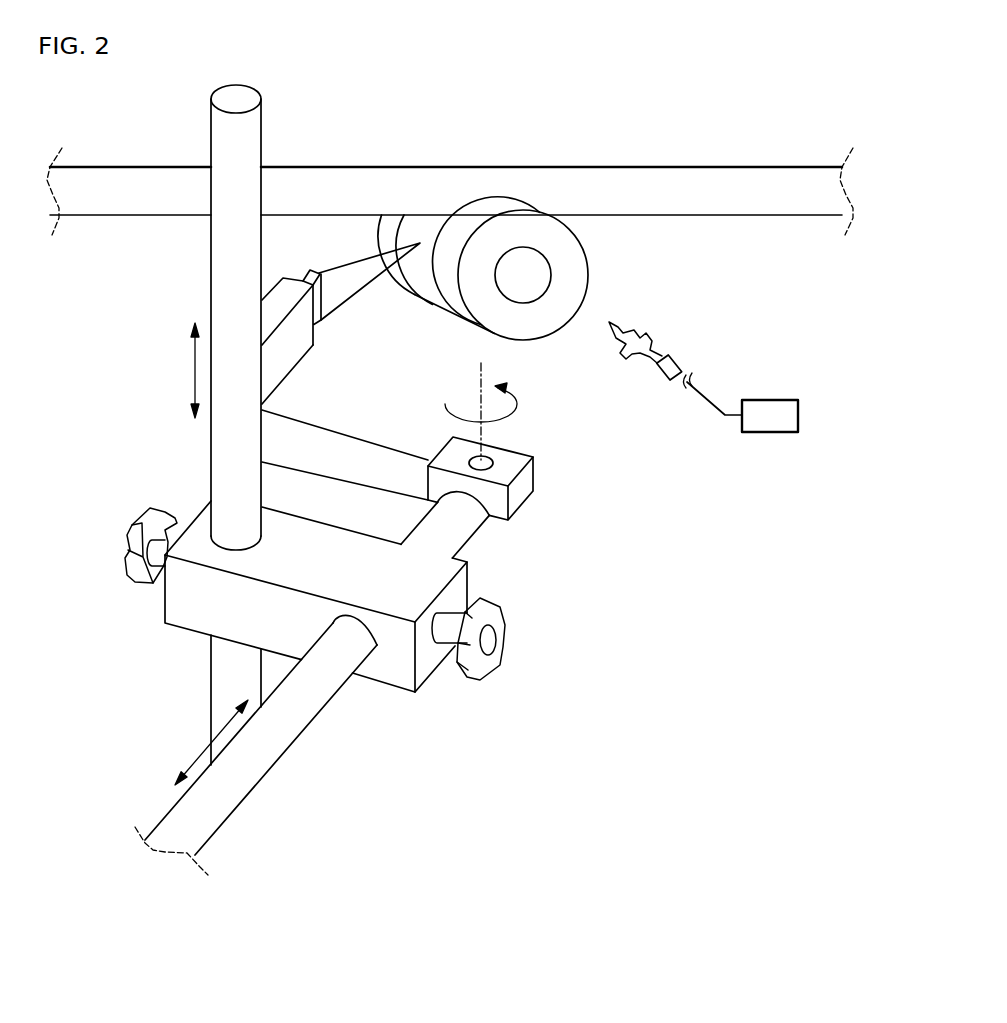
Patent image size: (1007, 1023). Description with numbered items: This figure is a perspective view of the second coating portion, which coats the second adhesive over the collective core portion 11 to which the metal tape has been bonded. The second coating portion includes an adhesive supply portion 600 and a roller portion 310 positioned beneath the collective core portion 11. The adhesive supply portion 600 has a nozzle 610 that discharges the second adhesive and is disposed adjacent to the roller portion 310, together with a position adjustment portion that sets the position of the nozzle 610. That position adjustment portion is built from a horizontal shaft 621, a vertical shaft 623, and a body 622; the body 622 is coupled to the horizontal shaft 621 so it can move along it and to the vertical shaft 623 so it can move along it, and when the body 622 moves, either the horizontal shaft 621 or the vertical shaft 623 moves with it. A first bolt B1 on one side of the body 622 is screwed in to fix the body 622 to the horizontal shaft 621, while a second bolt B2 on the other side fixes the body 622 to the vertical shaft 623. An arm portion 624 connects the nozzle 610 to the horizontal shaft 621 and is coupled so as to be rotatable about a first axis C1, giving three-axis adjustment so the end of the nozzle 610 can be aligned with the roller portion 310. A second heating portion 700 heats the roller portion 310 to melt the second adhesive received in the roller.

The collective core portion 11 is at (650, 176).
The roller portion 310 is at (573, 277).
The adhesive supply portion 600 is at (380, 480).
The nozzle 610 is at (347, 278).
The horizontal shaft 621 is at (245, 773).
The body 622 is at (427, 667).
The vertical shaft 623 is at (230, 443).
The arm portion 624 is at (350, 455).
The second heating portion 700 is at (773, 455).
The first bolt B1 is at (506, 636).
The second bolt B2 is at (135, 540).
The first axis C1 is at (484, 377).